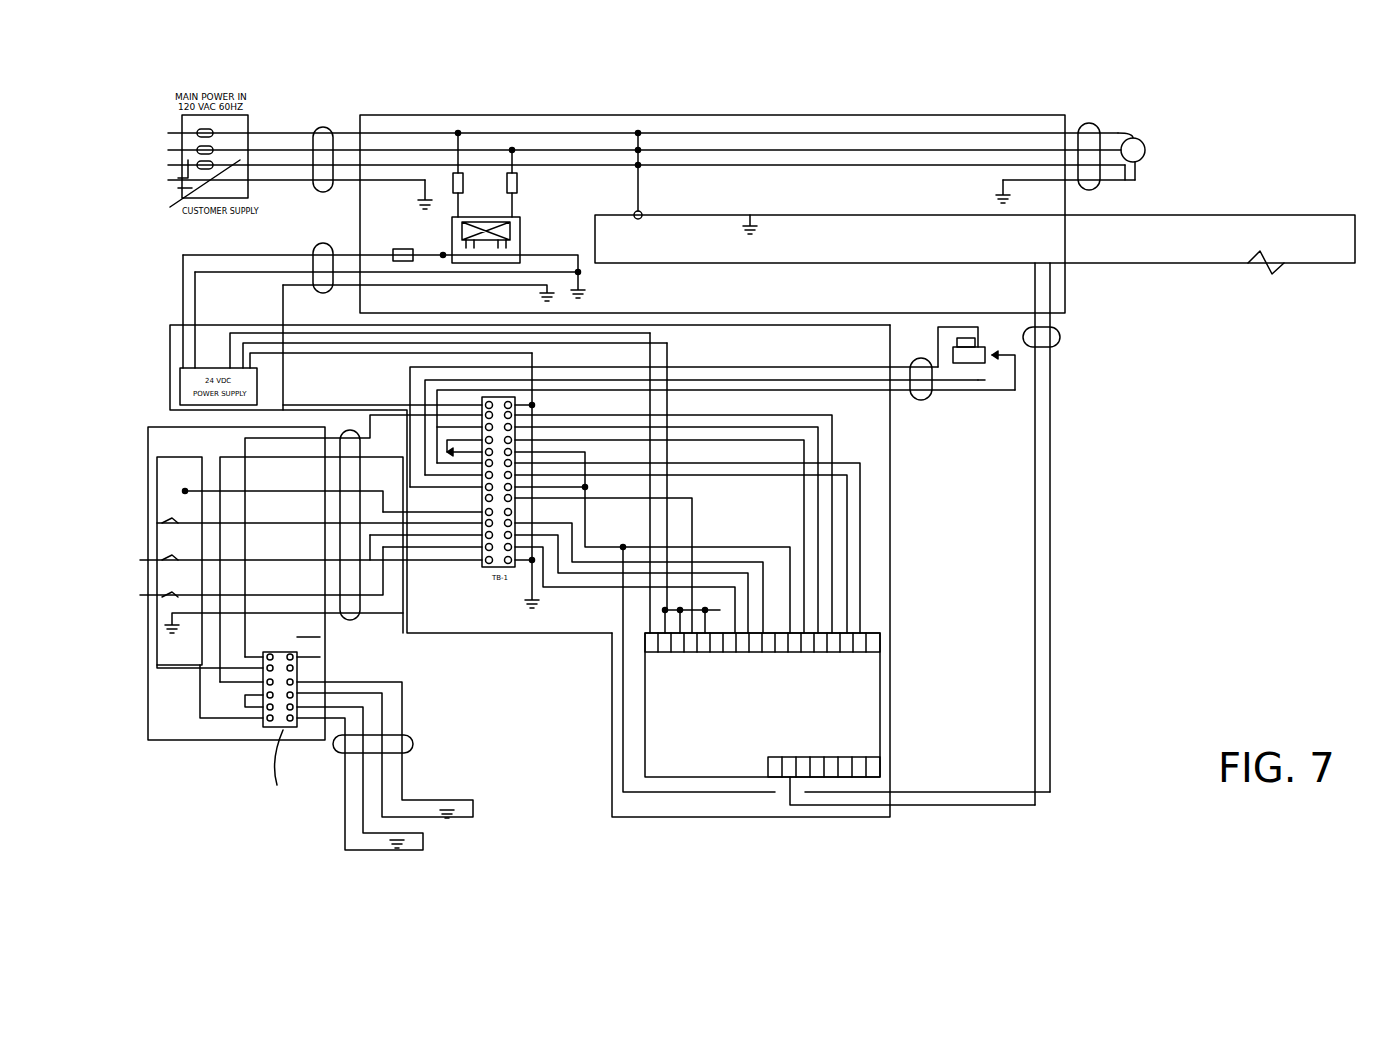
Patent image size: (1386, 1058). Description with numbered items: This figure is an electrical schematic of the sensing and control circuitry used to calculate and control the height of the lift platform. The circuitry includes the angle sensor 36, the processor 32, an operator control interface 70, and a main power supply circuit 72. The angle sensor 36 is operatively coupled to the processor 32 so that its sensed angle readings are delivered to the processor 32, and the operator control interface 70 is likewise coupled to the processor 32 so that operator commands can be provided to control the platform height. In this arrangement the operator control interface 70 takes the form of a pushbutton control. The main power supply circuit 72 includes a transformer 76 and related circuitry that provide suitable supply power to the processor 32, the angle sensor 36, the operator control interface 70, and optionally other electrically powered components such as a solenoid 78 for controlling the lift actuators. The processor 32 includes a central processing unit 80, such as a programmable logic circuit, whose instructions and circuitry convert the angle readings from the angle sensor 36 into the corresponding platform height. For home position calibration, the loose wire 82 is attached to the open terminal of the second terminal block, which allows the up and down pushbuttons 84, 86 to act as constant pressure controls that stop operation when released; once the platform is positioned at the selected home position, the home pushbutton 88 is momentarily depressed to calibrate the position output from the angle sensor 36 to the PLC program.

The main power supply circuit 72 is at (827, 115).
The transformer 76 is at (478, 217).
The solenoid 78 is at (1275, 250).
The angle sensor 36 is at (1005, 368).
The processor 32 is at (690, 820).
The central processing unit 80 is at (858, 710).
The operator control interface 70 is at (180, 748).
The up pushbutton 84 is at (157, 523).
The home pushbutton 88 is at (157, 560).
The down pushbutton 86 is at (157, 597).
The loose wire 82 is at (312, 641).